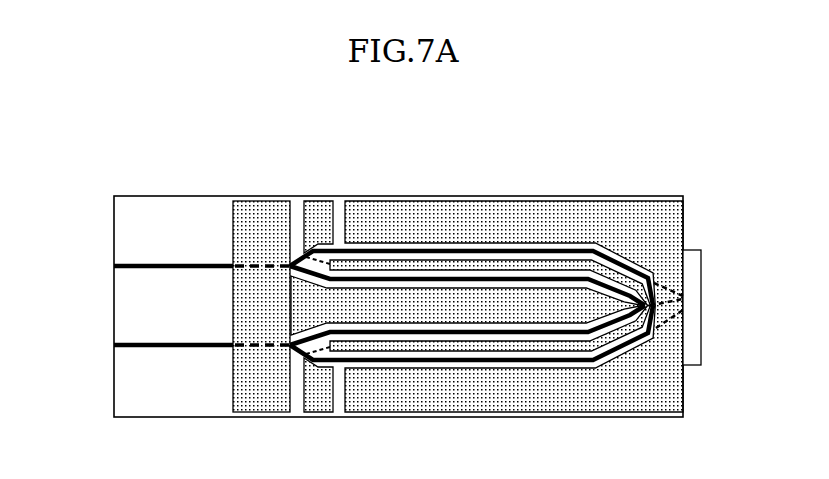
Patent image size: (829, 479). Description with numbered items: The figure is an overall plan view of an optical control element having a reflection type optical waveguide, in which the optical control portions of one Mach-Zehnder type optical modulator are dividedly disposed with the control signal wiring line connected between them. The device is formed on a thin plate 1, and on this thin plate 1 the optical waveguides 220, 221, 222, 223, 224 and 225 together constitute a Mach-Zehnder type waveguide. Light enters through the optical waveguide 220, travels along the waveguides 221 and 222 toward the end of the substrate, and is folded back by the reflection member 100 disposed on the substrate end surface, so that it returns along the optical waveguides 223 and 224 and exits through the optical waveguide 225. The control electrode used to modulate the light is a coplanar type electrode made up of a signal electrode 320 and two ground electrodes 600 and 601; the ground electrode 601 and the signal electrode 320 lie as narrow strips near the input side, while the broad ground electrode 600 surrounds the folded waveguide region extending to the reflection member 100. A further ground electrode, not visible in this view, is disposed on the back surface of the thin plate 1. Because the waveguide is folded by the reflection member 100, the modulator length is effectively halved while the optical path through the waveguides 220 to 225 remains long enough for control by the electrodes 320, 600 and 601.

The thin plate 1 is at (164, 225).
The ground electrode 601 is at (263, 218).
The signal electrode 320 is at (321, 215).
The ground electrode 600 is at (578, 220).
The optical waveguide 221 is at (437, 251).
The optical waveguide 222 is at (492, 262).
The optical waveguide 223 is at (528, 333).
The optical waveguide 224 is at (455, 361).
The optical waveguide 220 is at (139, 266).
The optical waveguide 225 is at (138, 346).
The reflection member 100 is at (688, 307).